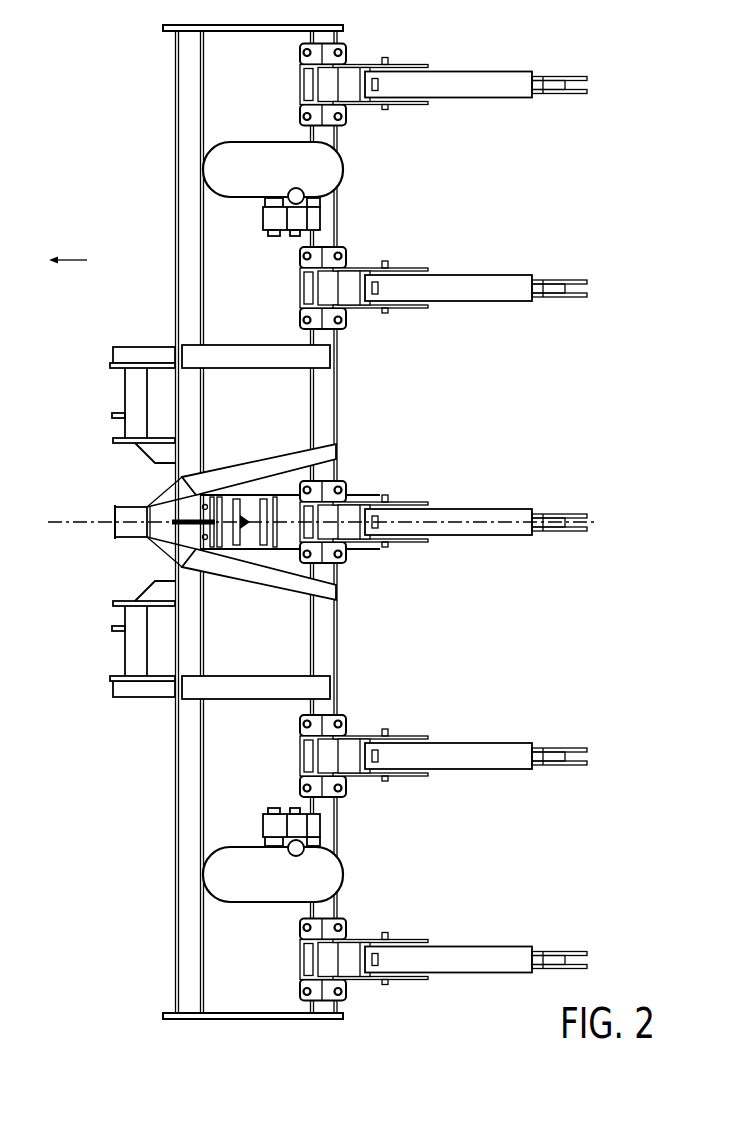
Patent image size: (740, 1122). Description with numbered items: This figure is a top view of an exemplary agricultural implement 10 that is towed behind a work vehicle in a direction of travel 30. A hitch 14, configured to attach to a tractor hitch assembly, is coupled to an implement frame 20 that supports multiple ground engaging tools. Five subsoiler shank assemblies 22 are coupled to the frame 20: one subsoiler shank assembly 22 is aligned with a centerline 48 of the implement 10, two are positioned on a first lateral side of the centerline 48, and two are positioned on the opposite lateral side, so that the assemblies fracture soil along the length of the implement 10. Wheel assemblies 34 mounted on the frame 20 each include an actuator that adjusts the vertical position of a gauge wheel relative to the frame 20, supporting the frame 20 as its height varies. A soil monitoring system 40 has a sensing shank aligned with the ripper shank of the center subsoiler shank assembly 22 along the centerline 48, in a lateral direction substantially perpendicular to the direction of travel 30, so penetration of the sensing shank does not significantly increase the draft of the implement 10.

The agricultural implement 10 is at (116, 137).
The implement frame 20 is at (183, 238).
The subsoiler shank assembly 22 is at (455, 70).
The direction of travel 30 is at (73, 259).
The wheel assembly 34 is at (252, 132).
The soil monitoring system 40 is at (188, 492).
The hitch 14 is at (130, 505).
The centerline 48 is at (89, 523).